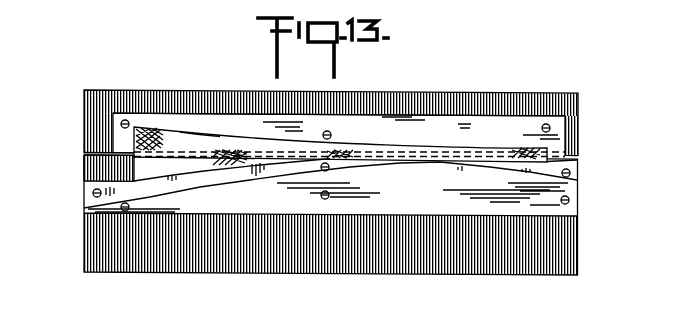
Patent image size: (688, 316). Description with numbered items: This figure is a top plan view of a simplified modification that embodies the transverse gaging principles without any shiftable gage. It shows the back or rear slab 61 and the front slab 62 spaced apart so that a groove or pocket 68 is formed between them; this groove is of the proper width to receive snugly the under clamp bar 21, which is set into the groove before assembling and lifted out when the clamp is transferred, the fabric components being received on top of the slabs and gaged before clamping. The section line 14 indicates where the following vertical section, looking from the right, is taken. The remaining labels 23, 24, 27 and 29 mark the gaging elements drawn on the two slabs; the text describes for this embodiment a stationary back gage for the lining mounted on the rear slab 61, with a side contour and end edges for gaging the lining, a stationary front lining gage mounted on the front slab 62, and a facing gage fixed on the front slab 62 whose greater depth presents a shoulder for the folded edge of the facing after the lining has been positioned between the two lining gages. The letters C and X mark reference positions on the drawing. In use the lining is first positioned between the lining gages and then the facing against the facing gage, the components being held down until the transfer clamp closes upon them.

The rear slab 61 is at (521, 86).
The front slab 62 is at (555, 238).
The groove 68 is at (84, 152).
The under clamp bar 21 is at (108, 154).
The cavity top surface of upper block 23 is at (401, 116).
The upper wedge 24 is at (376, 134).
The lower bowed wedge plate 27 is at (237, 178).
The lower plate 29 is at (362, 194).
The reference point C on wedge C is at (190, 137).
The section line 14— 14 is at (207, 72).
The section line X- X is at (474, 192).